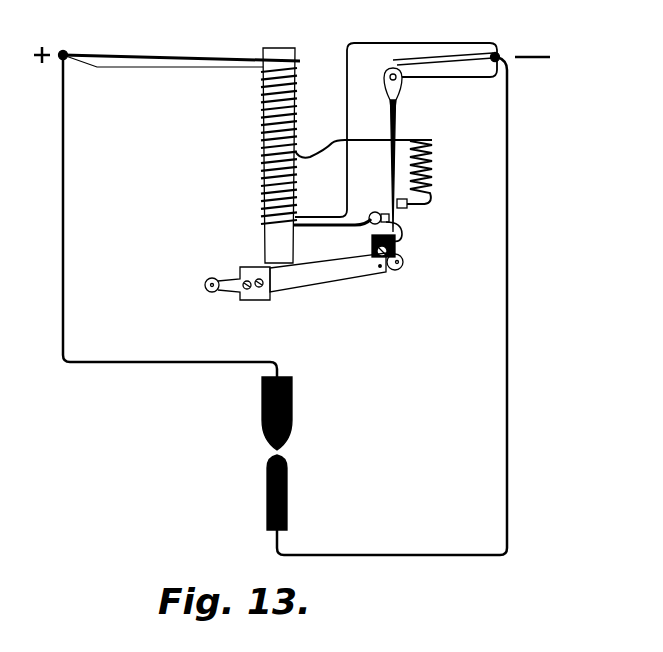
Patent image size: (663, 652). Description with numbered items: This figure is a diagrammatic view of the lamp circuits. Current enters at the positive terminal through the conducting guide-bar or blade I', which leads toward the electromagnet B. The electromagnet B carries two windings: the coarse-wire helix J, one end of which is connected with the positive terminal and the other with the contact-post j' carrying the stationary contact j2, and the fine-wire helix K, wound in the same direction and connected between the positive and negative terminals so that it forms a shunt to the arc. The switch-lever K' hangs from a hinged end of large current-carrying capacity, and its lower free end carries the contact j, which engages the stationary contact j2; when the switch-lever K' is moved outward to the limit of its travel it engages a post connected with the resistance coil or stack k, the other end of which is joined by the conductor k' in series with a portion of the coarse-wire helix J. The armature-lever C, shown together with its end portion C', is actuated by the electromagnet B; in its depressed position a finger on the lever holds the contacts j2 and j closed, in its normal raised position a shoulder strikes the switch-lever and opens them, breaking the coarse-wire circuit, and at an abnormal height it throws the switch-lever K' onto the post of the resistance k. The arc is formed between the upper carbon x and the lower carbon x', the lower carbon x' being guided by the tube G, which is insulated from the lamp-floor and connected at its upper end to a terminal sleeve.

The conducting guide-bar or blade I' is at (170, 216).
The coarse-wire helix J is at (185, 50).
The tube G is at (401, 306).
The resistance element x is at (286, 413).
The lower carbon x' is at (288, 492).
The electromagnet B is at (279, 144).
The fine-wire helix K is at (293, 146).
The conductor k' is at (396, 130).
The switch-lever K' is at (438, 142).
The resistance coil or stack k is at (422, 174).
The contact j is at (403, 213).
The stationary contact j2 is at (374, 210).
The contact-post j' is at (371, 239).
The armature-lever C is at (336, 278).
The bar mounting pad C' is at (237, 291).